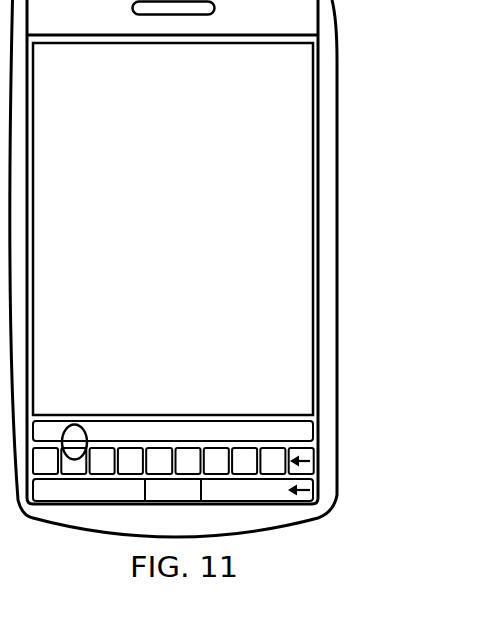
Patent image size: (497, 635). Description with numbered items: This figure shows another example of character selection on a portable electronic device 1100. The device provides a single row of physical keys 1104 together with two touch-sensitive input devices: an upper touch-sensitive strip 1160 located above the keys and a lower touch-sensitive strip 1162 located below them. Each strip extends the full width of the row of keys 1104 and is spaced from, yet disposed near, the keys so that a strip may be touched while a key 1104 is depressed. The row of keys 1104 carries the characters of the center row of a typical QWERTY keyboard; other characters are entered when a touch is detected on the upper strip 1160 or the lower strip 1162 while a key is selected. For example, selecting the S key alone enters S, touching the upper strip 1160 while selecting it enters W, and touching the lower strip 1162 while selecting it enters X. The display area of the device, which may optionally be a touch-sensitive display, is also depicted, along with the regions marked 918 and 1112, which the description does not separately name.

The portable electronic device 1100 is at (57, 560).
The touchscreen display 918 is at (308, 88).
The display area 1112 is at (210, 215).
The upper touch-sensitive strip 1160 is at (315, 427).
The single row of physical keys 1104 is at (295, 462).
The lower touch-sensitive strip 1162 is at (292, 492).